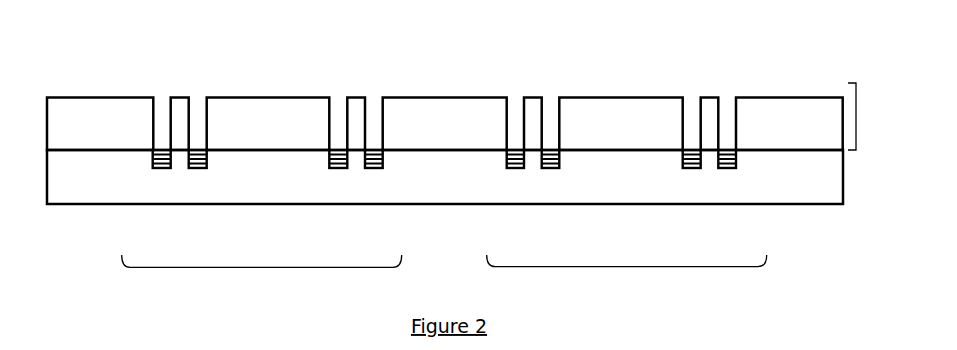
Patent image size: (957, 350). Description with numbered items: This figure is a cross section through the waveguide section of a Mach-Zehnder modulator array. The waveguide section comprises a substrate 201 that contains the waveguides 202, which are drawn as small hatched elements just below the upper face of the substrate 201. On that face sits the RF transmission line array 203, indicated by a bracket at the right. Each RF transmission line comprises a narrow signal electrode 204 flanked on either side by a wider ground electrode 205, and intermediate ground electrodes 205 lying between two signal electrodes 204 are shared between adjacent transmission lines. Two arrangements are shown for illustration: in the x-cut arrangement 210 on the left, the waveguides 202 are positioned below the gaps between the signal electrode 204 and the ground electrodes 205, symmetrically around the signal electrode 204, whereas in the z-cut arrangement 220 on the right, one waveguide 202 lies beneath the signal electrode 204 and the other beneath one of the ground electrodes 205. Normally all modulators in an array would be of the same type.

The substrate 201 is at (82, 205).
The waveguides 202 is at (162, 168).
The RF transmission line array 203 is at (858, 115).
The signal electrode 204 is at (179, 95).
The ground electrode 205 is at (112, 95).
The x-cut modulator arrangement 210 is at (262, 267).
The z-cut modulator arrangement 220 is at (627, 267).